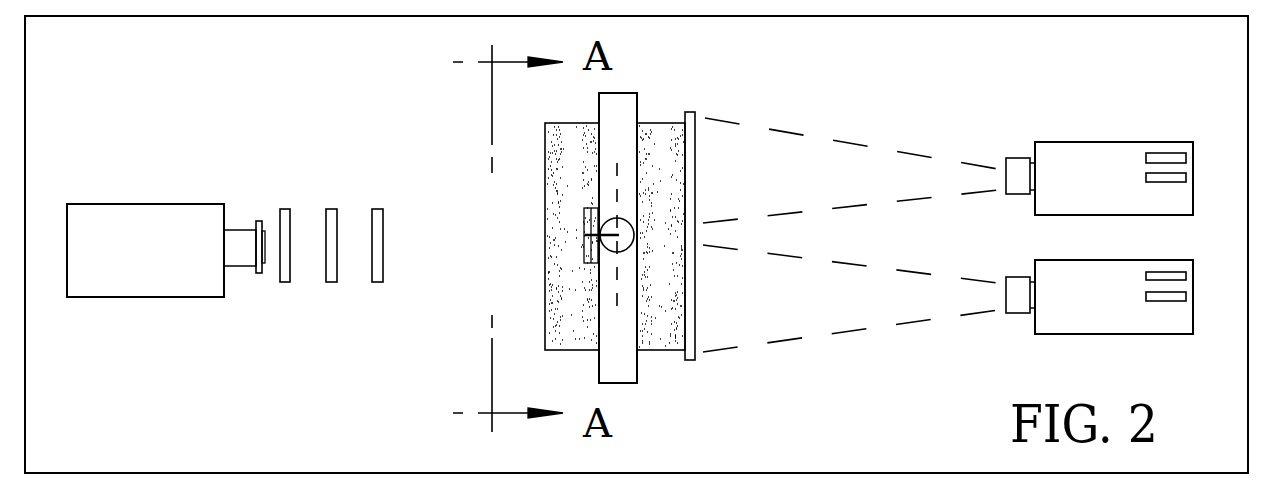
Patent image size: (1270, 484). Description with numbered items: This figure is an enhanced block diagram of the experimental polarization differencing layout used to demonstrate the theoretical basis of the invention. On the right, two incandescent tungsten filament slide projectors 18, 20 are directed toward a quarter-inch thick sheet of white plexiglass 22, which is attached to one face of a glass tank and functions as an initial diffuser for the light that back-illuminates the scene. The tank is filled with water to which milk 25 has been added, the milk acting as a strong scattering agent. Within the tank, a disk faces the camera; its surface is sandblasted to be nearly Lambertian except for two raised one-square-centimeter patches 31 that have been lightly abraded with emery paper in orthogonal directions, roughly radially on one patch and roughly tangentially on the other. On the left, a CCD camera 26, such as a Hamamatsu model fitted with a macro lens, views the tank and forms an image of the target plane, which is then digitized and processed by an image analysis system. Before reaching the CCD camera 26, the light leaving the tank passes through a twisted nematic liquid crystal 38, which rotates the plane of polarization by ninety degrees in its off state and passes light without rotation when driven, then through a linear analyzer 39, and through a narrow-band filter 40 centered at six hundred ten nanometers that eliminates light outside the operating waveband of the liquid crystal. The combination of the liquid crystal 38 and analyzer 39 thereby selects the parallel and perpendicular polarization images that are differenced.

The slide projector 18 is at (1193, 187).
The slide projector 20 is at (1193, 289).
The white plexiglass sheet 22 is at (728, 157).
The milk 25 is at (657, 143).
The CCD camera 26 is at (137, 204).
The patch 31 is at (622, 252).
The twisted nematic liquid crystal 38 is at (377, 283).
The linear analyzer 39 is at (330, 209).
The narrow-band filter 40 is at (281, 209).